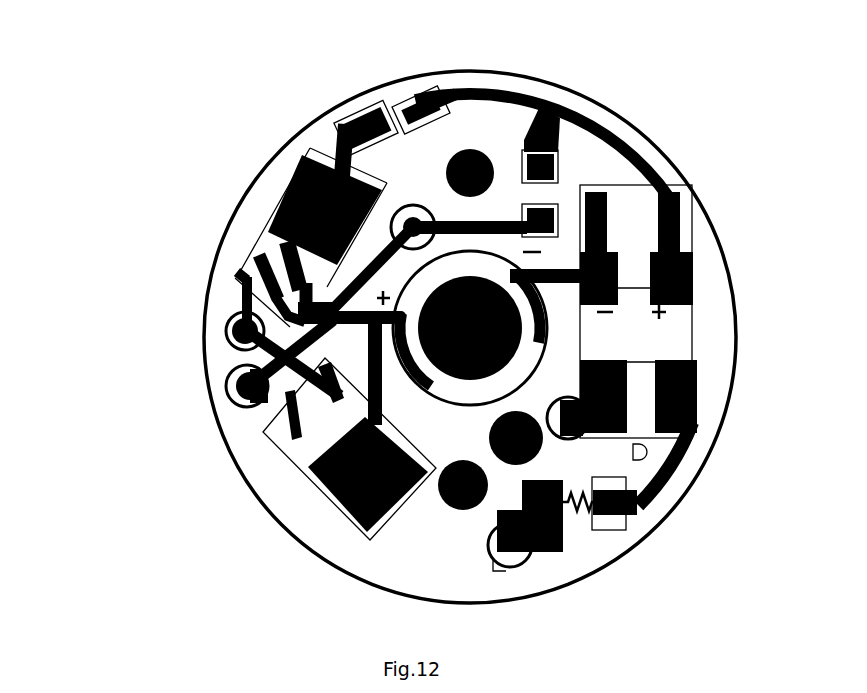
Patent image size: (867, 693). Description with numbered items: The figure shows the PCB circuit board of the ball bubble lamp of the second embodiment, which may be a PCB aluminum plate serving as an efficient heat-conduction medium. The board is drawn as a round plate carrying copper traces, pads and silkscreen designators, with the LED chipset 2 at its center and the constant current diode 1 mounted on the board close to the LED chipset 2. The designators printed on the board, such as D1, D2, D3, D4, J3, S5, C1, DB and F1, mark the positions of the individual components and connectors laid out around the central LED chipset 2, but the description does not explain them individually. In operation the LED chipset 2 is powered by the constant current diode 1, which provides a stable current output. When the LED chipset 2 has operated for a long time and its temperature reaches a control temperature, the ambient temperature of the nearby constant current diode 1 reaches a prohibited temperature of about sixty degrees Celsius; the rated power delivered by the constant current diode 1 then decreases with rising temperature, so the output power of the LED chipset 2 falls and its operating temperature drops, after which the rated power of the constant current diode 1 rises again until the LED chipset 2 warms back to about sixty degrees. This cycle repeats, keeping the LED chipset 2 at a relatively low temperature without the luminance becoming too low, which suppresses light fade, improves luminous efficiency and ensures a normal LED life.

The constant current diode 1 is at (308, 450).
The LED chipset 2 is at (508, 290).
The LED D1 is at (439, 412).
The diode D2 is at (311, 225).
The diode D3 is at (349, 449).
The diode D4 is at (395, 127).
The connector J3 is at (239, 339).
The pad S5 is at (429, 256).
The capacitor C1 is at (580, 171).
The bridge rectifier DB is at (637, 322).
The fuse F1 is at (562, 522).